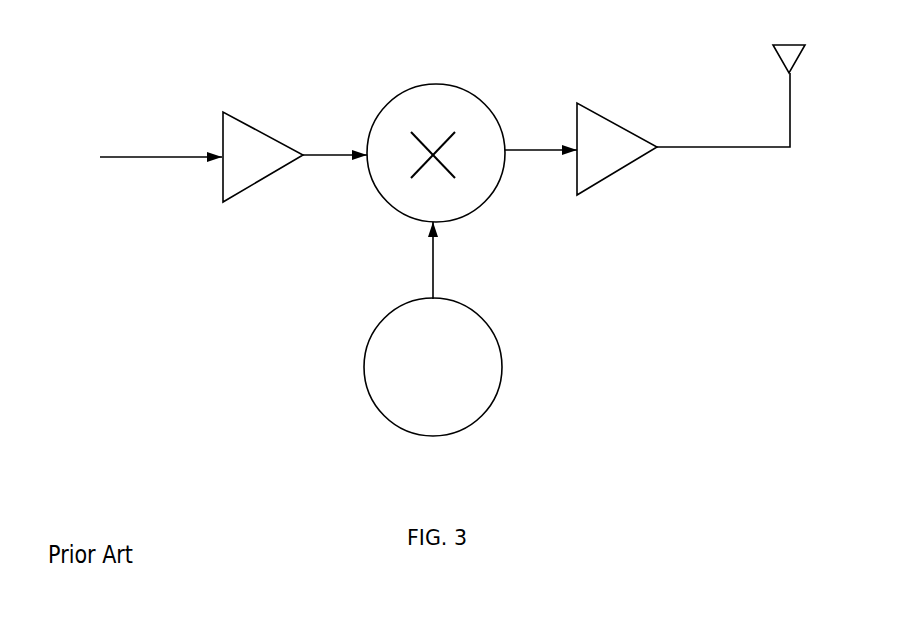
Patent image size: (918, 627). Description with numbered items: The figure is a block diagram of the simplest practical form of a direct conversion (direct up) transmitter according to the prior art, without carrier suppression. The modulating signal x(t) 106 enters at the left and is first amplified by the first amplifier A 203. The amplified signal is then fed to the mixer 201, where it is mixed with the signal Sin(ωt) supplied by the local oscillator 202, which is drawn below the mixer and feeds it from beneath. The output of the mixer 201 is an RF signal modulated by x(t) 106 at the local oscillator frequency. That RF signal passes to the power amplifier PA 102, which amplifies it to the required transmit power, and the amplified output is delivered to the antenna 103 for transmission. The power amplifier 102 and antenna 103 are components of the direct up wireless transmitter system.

The modulating signal x(t) 106 is at (64, 196).
The first amplifier A 203 is at (262, 196).
The mixer 201 is at (488, 207).
The local oscillator 202 is at (513, 376).
The power amplifier 102 is at (621, 181).
The antenna 103 is at (812, 62).